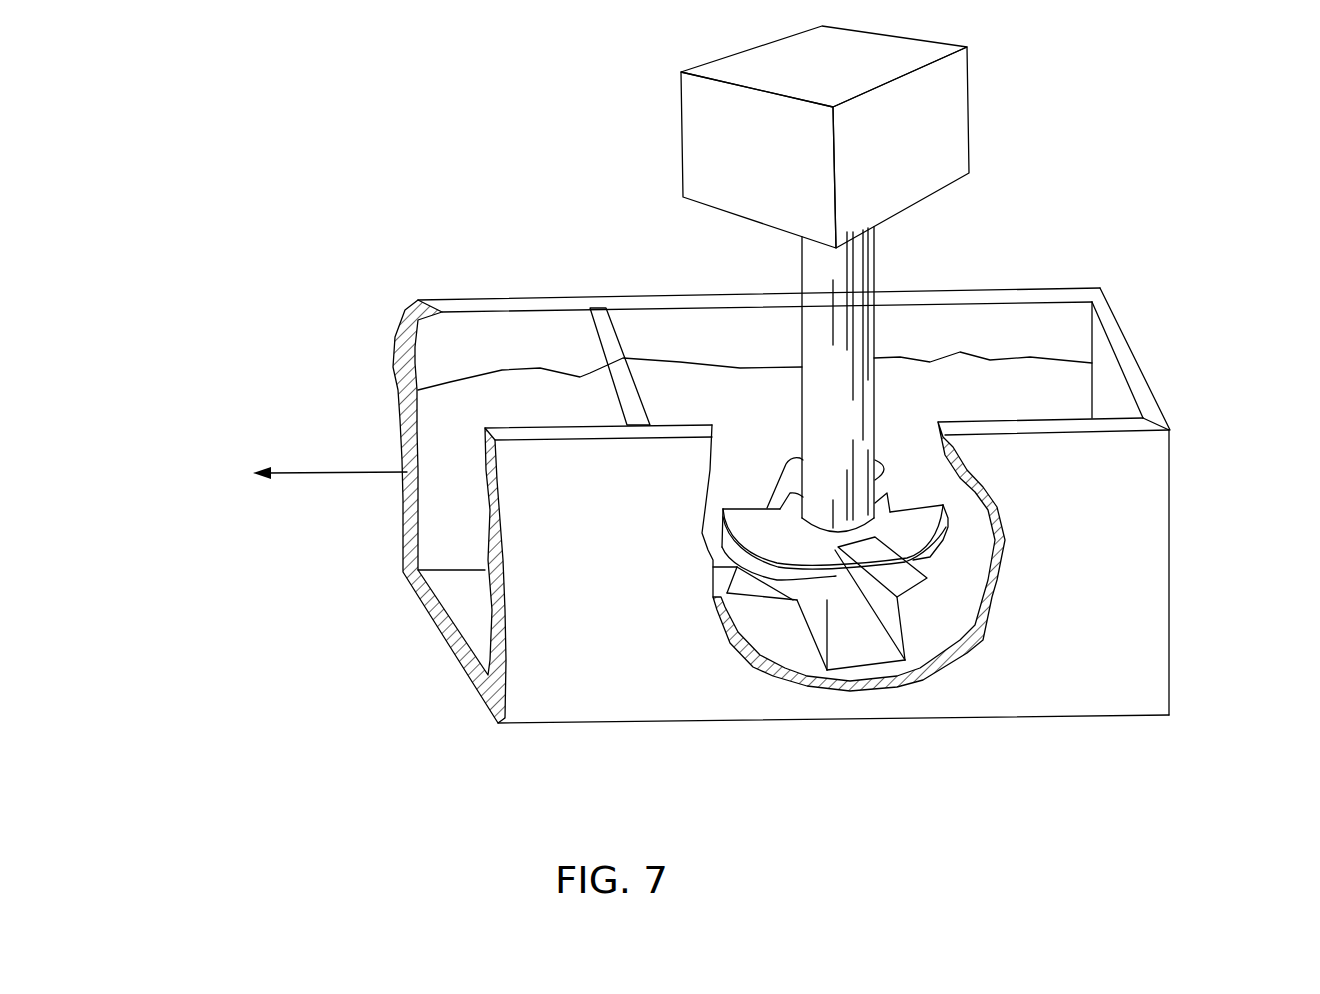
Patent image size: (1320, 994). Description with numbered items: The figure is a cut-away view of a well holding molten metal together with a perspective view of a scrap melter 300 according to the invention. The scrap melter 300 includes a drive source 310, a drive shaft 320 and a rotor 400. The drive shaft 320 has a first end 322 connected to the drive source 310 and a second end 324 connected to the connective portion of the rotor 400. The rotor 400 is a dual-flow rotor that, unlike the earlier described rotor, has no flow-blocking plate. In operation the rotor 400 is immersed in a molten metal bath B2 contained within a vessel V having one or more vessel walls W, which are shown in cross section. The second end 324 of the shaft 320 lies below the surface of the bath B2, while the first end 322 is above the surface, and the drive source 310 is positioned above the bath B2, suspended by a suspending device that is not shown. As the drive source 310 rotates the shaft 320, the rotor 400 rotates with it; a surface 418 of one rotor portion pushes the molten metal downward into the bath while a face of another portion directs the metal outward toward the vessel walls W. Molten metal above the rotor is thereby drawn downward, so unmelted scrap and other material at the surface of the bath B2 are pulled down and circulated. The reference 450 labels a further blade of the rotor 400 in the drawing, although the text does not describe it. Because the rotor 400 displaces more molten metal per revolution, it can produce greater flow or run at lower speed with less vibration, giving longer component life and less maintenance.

The scrap melter 300 is at (1206, 138).
The drive source 310 is at (942, 127).
The drive shaft 320 is at (827, 405).
The first end 322 is at (877, 258).
The second end 324 is at (880, 500).
The rotor 400 is at (744, 608).
The surface 418 is at (818, 623).
The impeller vane 450 is at (885, 604).
The vessel wall W is at (518, 298).
The vessel V is at (1112, 538).
The molten metal bath B2 is at (558, 405).